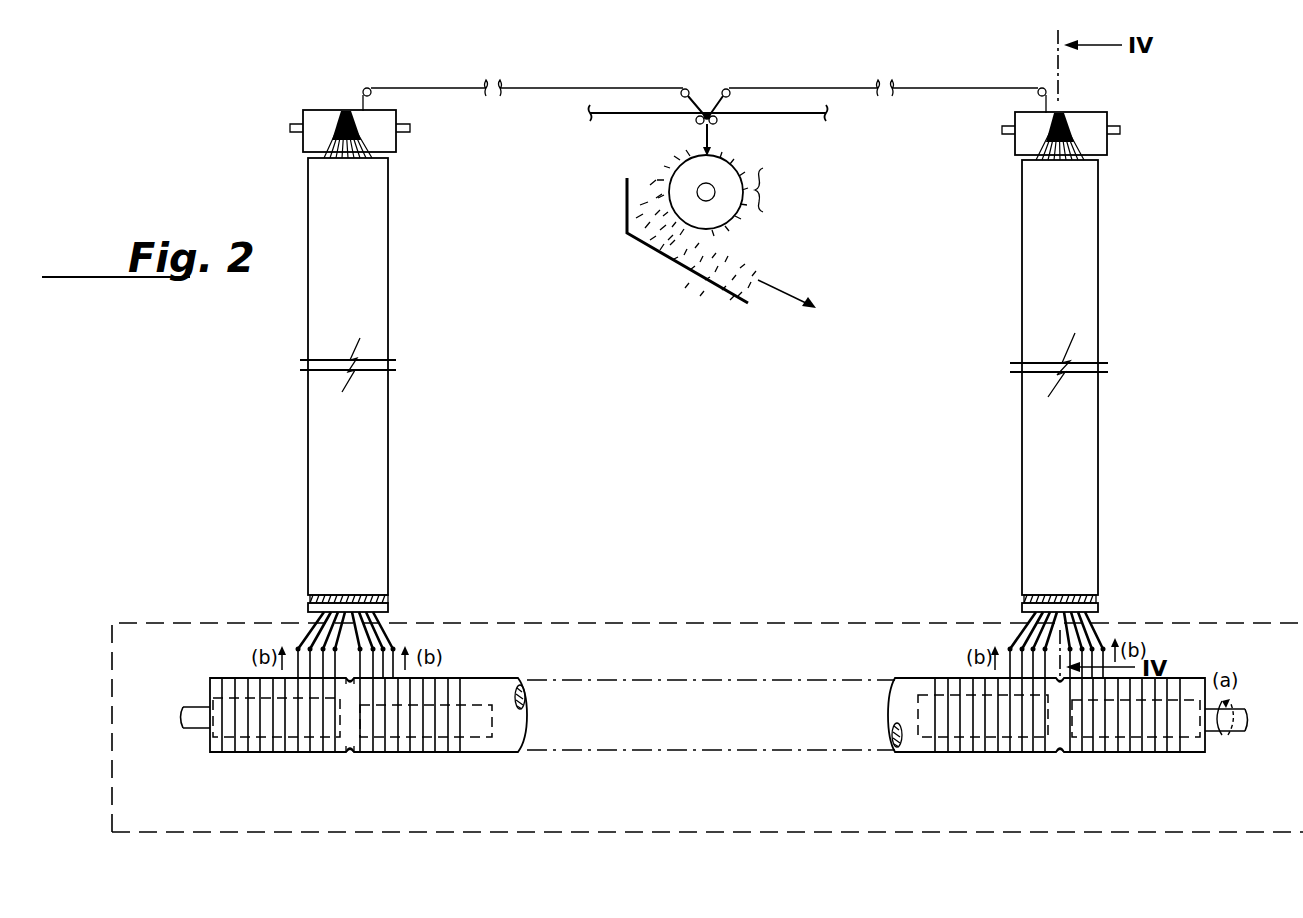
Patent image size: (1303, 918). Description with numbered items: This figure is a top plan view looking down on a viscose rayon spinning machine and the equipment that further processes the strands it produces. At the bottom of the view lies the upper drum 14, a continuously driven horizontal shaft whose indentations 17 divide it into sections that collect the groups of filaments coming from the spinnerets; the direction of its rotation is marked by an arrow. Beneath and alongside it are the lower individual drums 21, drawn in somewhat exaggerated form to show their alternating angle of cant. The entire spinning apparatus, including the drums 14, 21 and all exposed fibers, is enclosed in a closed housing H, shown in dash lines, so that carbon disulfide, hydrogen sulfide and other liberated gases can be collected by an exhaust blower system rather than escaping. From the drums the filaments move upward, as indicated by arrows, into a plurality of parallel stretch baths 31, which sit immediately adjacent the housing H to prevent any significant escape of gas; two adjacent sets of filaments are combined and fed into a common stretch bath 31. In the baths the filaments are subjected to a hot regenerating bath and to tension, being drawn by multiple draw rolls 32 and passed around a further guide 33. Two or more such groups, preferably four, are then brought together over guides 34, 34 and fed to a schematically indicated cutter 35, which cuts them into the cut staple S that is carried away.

The upper drum 14 is at (513, 745).
The indentations 17 is at (352, 753).
The lower individual drums 21 is at (213, 703).
The stretch baths 31 is at (366, 450).
The draw rolls 32 is at (316, 124).
The guide 33 is at (370, 88).
The guides 34 is at (697, 123).
The cutter 35 is at (726, 193).
The housing H is at (206, 620).
The cut staple S is at (787, 280).